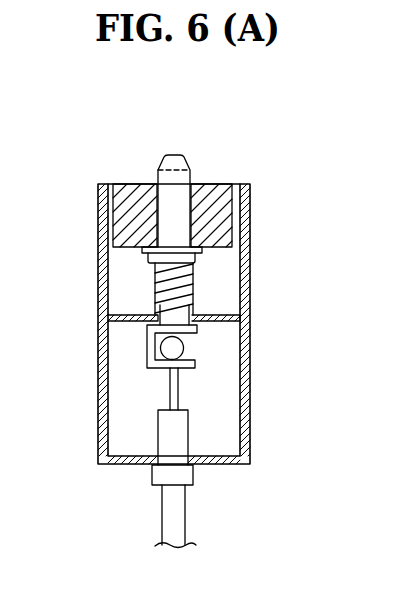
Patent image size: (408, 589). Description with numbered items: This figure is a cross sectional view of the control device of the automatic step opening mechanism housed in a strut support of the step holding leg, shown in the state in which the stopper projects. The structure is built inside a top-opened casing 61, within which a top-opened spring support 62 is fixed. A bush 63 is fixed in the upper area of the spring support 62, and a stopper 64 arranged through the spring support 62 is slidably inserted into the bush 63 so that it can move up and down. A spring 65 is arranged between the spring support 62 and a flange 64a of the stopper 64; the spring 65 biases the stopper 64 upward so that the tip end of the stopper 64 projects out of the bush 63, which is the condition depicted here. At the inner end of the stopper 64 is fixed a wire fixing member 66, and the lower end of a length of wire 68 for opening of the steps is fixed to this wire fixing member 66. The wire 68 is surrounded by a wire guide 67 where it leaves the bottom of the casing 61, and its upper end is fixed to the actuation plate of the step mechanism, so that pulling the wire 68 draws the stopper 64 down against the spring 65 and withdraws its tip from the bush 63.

The casing 61 is at (100, 406).
The spring support 62 is at (131, 321).
The bush 63 is at (138, 200).
The stopper 64 is at (190, 175).
The flange 64a is at (195, 254).
The spring 65 is at (157, 284).
The wire fixing member 66 is at (193, 362).
The wire guide 67 is at (178, 476).
The wire 68 is at (178, 390).